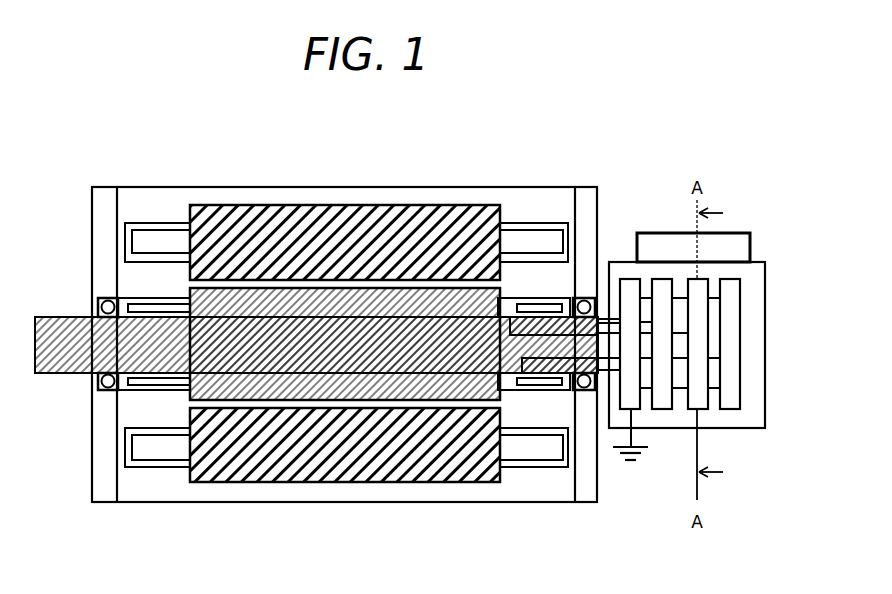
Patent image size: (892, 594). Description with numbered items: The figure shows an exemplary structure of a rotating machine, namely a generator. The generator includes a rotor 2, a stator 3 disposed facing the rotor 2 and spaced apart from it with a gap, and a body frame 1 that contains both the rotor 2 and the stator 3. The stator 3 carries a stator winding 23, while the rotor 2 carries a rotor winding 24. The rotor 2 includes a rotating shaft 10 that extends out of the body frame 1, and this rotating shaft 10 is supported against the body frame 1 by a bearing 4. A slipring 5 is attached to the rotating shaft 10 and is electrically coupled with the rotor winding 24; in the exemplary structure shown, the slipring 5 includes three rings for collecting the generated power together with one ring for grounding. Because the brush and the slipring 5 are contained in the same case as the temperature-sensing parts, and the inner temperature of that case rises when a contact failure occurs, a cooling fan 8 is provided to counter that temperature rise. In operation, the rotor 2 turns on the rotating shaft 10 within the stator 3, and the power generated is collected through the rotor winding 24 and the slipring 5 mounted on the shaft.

The body frame 1 is at (385, 503).
The rotor 2 is at (500, 395).
The stator 3 is at (468, 483).
The bearing 4 is at (586, 297).
The slipring 5 is at (765, 308).
The cooling fan 8 is at (738, 233).
The rotating shaft 10 is at (50, 375).
The stator winding 23 is at (527, 222).
The rotor winding 24 is at (145, 302).